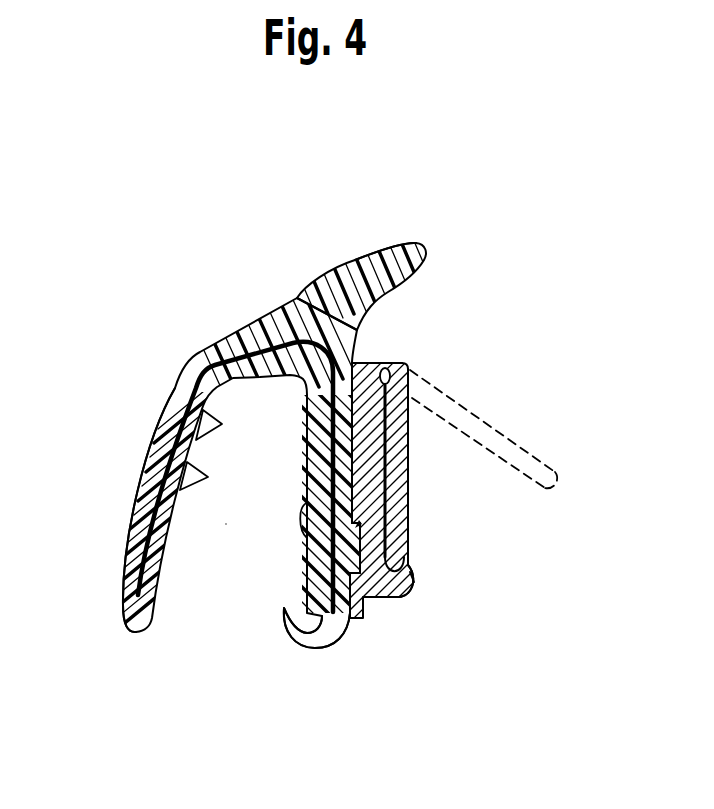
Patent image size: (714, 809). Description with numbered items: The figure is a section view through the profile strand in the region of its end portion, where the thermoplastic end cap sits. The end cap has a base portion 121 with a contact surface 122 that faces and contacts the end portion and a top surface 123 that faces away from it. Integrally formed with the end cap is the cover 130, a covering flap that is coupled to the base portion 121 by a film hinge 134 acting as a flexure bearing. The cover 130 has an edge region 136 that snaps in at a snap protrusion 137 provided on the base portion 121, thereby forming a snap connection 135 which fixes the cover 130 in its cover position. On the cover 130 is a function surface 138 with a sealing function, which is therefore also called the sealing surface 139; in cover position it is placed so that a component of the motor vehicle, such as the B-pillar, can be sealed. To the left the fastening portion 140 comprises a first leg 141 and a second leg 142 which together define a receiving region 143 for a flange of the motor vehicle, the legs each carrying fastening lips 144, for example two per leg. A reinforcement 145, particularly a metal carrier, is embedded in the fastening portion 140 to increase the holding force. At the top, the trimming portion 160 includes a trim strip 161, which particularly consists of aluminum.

The base portion 121 is at (362, 630).
The contact surface 122 is at (340, 451).
The top surface 123 is at (397, 500).
The cover 130 is at (416, 466).
The film hinge 134 is at (386, 352).
The snap connection 135 is at (428, 582).
The edge region 136 is at (416, 556).
The snap protrusion 137 is at (403, 585).
The function surface 138 is at (416, 407).
The sealing surface 139 is at (416, 438).
The fastening portion 140 is at (205, 345).
The first leg 141 is at (131, 517).
The second leg 142 is at (326, 650).
The receiving region 143 is at (224, 532).
The fastening lips 144 is at (172, 428).
The reinforcement 145 is at (246, 345).
The trimming portion 160 is at (415, 240).
The trim strip 161 is at (357, 263).